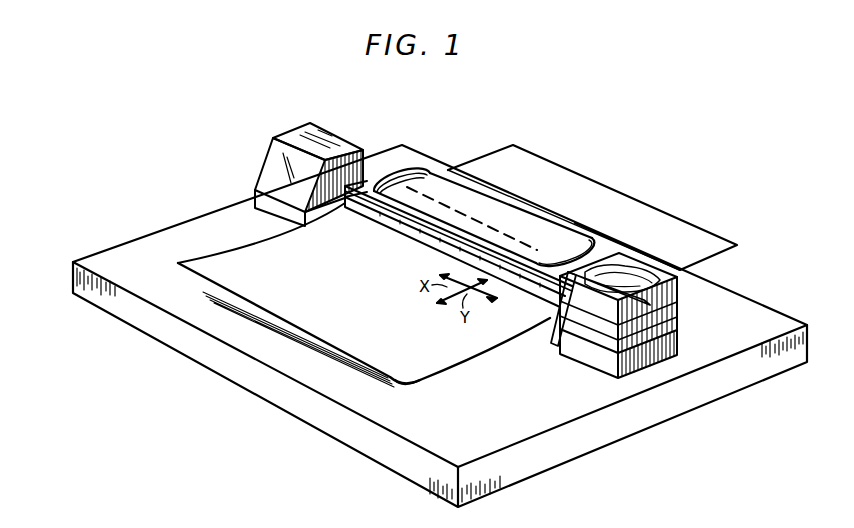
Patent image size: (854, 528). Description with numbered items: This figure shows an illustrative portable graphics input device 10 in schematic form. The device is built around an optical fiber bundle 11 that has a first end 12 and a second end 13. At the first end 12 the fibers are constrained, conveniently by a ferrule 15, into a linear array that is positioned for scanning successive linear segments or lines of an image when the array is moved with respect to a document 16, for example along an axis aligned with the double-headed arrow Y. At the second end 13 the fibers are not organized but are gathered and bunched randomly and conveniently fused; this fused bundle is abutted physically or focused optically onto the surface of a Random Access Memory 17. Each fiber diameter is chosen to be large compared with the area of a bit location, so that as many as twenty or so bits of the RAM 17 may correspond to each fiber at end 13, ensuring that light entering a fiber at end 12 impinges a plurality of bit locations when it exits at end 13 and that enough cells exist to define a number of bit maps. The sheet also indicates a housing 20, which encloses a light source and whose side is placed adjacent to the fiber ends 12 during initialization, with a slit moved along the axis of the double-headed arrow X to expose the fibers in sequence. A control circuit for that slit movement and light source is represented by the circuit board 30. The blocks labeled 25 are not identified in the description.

The portable graphics input device 10 is at (508, 413).
The optical fiber bundle 11 is at (571, 231).
The first end of optical fiber bundle 12 is at (440, 227).
The second end of optical fiber bundle 13 is at (633, 282).
The ferrule 15 is at (386, 218).
The document 16 is at (182, 263).
The Random Access Memory (RAM) 17 is at (640, 305).
The housing 20 is at (480, 357).
The support block 25 is at (340, 140).
The circuit board 30 is at (565, 337).